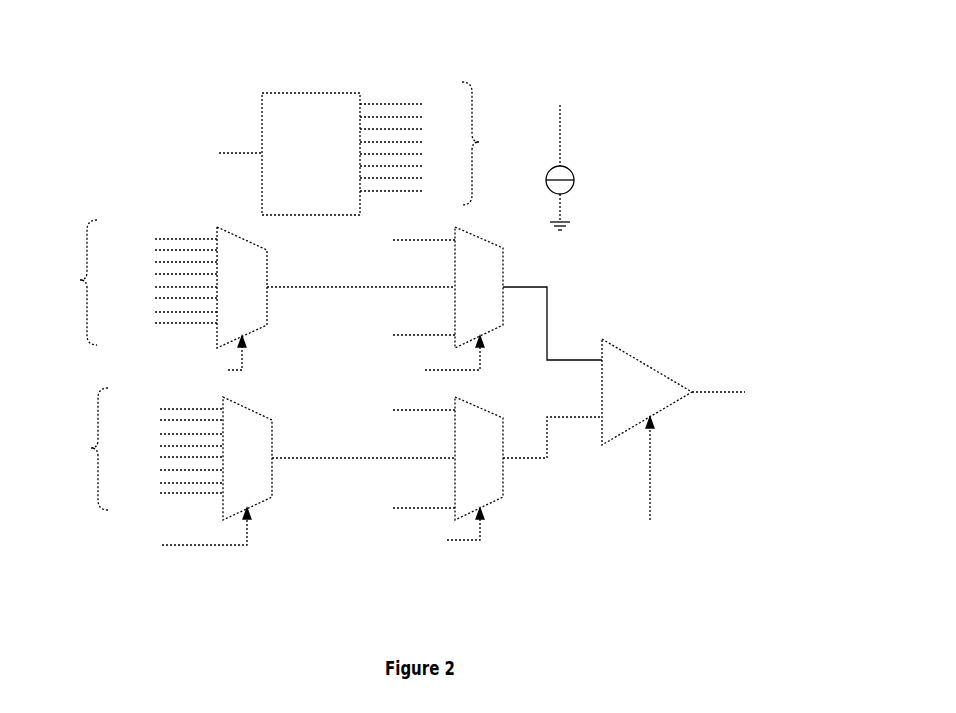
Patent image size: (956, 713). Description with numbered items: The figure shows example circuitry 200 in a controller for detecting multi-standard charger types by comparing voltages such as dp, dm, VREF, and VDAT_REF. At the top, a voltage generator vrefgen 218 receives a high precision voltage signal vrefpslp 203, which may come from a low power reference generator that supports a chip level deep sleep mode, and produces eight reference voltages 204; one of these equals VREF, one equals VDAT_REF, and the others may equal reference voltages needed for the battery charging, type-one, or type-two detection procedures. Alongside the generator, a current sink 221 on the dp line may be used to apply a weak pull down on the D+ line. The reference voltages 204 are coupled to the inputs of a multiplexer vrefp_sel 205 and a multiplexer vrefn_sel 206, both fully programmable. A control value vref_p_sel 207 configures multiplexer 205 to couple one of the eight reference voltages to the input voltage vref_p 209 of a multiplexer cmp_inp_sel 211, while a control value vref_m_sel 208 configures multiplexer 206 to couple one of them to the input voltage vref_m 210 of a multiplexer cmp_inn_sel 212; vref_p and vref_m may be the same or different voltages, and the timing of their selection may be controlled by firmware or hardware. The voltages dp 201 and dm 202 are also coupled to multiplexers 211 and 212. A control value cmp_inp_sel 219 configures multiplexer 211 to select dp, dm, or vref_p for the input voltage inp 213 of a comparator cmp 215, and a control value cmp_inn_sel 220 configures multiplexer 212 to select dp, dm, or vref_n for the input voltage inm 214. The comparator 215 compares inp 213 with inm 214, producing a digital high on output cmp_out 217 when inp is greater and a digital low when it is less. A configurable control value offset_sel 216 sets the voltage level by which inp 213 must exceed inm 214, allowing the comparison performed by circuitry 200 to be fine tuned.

The circuitry 200 is at (360, 59).
The voltage dp 201 is at (367, 248).
The voltage dm 202 is at (365, 348).
The voltage signal vrefpslp 203 is at (140, 161).
The reference voltages vref0-7 204 is at (32, 456).
The multiplexer vrefp_sel 205 is at (257, 299).
The multiplexer vrefn_sel 206 is at (261, 470).
The control value vref_p_sel 2.0 207 is at (155, 353).
The control value vref_m_sel 2.0 208 is at (50, 551).
The input voltage vref_p 209 is at (343, 283).
The input voltage vref_m 210 is at (345, 455).
The multiplexer cmp_inp_sel 211 is at (493, 299).
The multiplexer cmp_inn_sel 212 is at (495, 470).
The input voltage inp 213 is at (581, 353).
The input voltage inm 214 is at (582, 413).
The comparator cmp 215 is at (642, 405).
The control value offset_sel 2.0 216 is at (705, 543).
The output cmp_out 217 is at (855, 400).
The voltage generator vrefgen 218 is at (322, 165).
The control value cmp_inp_sel 1.0 219 is at (367, 357).
The control value cmp_inn_sel 1.0 220 is at (297, 549).
The current sink 221 is at (632, 206).